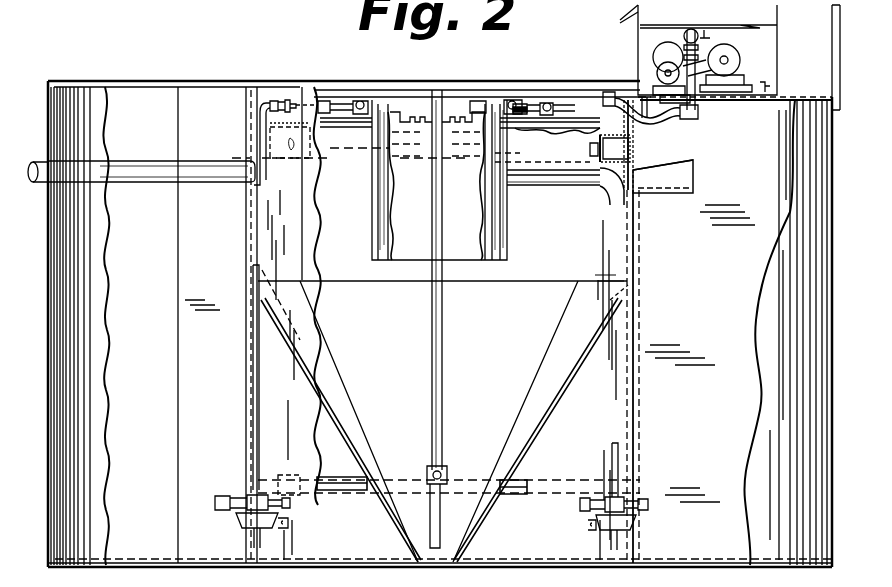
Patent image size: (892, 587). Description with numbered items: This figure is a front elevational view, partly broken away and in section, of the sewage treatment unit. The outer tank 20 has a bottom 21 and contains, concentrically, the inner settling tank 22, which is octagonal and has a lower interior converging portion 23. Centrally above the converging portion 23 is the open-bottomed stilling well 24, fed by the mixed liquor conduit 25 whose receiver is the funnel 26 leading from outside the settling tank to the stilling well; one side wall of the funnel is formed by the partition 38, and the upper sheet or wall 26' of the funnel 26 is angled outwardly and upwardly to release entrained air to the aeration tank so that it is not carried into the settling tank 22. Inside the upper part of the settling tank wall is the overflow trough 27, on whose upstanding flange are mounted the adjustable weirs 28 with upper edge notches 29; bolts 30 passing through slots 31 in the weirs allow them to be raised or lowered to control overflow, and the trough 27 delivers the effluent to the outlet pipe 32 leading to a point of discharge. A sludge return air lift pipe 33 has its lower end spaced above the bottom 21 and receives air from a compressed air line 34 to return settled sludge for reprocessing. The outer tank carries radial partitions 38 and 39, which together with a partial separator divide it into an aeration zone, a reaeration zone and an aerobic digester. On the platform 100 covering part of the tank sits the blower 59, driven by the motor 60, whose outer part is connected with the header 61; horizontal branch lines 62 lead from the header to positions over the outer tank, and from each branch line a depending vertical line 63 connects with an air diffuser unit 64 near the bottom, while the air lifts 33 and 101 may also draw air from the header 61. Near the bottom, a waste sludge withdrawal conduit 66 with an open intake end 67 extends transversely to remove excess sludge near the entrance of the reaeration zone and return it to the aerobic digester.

The outer tank 20 is at (60, 260).
The bottom 21 is at (156, 558).
The inner settling tank 22 is at (246, 225).
The lower interior converging portion 23 is at (340, 428).
The stilling well 24 is at (372, 232).
The mixed liquor conduit 25 is at (570, 183).
The funnel 26 is at (685, 176).
The upper sheet or wall of the funnel 26' is at (684, 149).
The overflow trough 27 is at (626, 165).
The adjustable weirs 28 is at (585, 112).
The upper edge notches 29 is at (566, 136).
The bolts 30 is at (590, 148).
The slots 31 is at (596, 156).
The outlet pipe 32 is at (147, 162).
The sludge return air lift pipe 33 is at (444, 386).
The compressed air line 34 is at (432, 382).
The radial partition 38 is at (715, 254).
The radial partition 39 is at (219, 385).
The blower 59 is at (655, 48).
The motor 60 is at (735, 50).
The header 61 is at (600, 96).
The horizontal branch lines 62 is at (265, 101).
The depending vertical line 63 is at (258, 264).
The air diffuser unit 64 is at (235, 503).
The waste sludge withdrawal conduit 66 is at (350, 492).
The open intake end 67 is at (282, 470).
The platform 100 is at (792, 97).
The air lift 101 is at (642, 248).